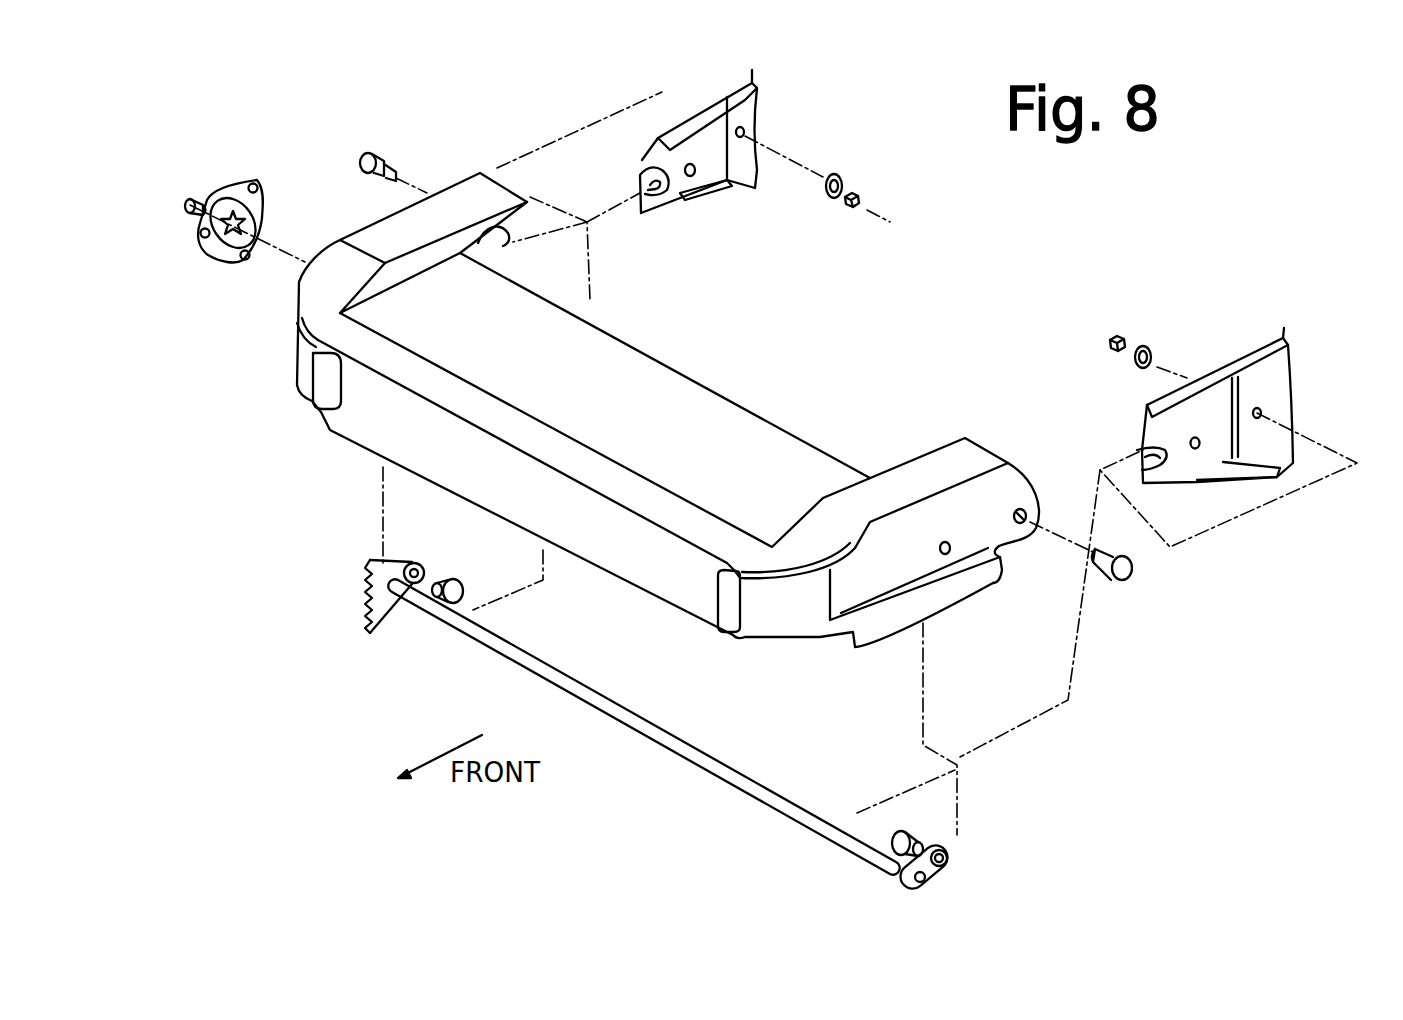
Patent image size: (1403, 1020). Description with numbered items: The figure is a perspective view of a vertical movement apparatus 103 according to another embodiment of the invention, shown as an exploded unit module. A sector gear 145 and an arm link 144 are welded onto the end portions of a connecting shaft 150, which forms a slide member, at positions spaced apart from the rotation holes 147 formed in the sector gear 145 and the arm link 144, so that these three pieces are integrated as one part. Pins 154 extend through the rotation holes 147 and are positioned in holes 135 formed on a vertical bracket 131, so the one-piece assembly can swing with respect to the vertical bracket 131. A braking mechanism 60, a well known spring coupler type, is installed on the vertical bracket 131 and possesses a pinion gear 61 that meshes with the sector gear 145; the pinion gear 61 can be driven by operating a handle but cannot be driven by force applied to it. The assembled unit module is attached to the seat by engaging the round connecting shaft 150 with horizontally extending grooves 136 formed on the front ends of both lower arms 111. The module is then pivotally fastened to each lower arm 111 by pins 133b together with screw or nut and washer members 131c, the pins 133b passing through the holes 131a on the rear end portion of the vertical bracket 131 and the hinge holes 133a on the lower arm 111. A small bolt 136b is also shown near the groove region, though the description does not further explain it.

The braking mechanism 60 is at (232, 182).
The pinion gear 61 is at (245, 215).
The vertical movement apparatus 103 is at (735, 385).
The lower arm 111 is at (737, 175).
The vertical bracket 131 is at (367, 427).
The hole 131a is at (948, 555).
The screw (or nut) and washer member 131c is at (850, 178).
The hinge hole 133a is at (743, 127).
The pin 133b is at (1122, 578).
The hole 135 is at (1023, 523).
The groove 136 is at (643, 185).
The bolt 136b is at (362, 153).
The arm link 144 is at (897, 887).
The sector gear 145 is at (383, 603).
The rotation hole 147 is at (410, 562).
The connecting shaft 150 is at (668, 740).
The pin 154 is at (450, 598).